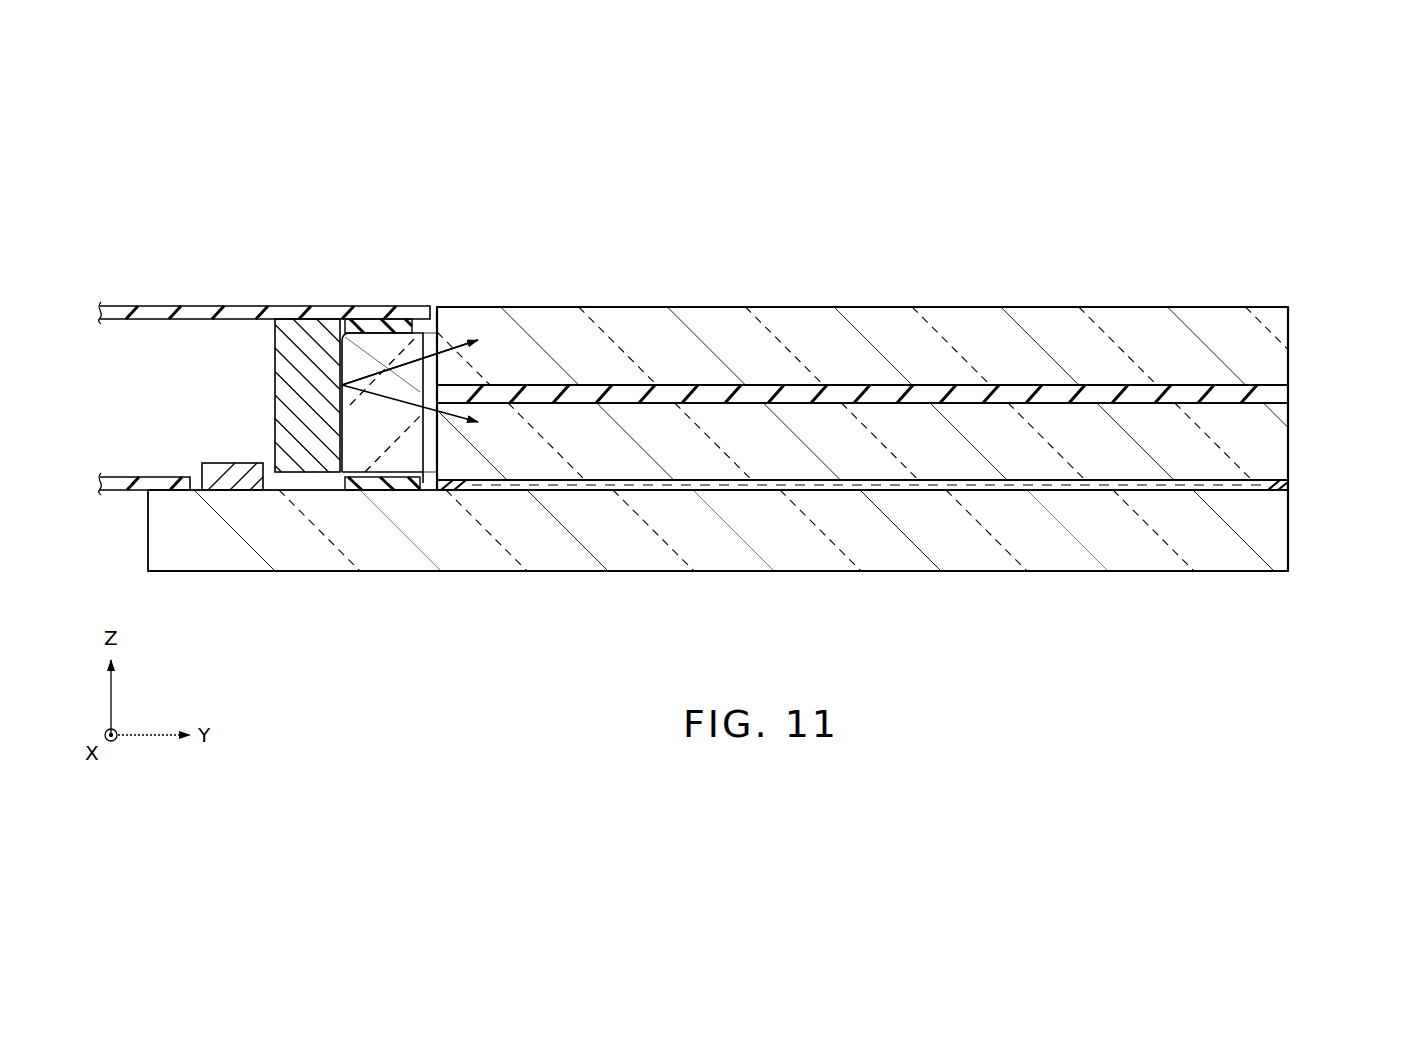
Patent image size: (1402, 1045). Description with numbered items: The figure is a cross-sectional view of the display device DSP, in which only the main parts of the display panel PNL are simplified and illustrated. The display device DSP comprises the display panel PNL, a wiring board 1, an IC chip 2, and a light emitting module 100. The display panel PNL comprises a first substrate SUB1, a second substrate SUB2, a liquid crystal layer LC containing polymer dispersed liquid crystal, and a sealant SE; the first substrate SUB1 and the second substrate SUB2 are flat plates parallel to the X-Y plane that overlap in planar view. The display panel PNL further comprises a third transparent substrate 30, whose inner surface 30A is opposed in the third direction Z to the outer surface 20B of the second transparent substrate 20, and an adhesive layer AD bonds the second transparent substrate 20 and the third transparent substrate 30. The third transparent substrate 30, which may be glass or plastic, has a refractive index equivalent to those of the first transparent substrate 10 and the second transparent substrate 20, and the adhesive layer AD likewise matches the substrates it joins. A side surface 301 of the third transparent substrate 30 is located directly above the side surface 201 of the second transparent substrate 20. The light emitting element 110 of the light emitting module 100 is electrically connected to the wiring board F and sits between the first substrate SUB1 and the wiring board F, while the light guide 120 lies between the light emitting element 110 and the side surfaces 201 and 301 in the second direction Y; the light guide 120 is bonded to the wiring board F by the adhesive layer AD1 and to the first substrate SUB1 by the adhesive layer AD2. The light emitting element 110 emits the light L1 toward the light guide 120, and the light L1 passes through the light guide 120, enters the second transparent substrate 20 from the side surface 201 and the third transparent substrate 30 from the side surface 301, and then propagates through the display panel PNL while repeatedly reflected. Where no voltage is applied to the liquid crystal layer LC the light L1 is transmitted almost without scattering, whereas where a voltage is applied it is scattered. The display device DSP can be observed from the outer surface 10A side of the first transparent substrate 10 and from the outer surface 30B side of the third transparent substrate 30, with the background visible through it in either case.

The display device DSP is at (1112, 183).
The wiring board F is at (199, 313).
The wiring board 1 is at (127, 477).
The IC chip 2 is at (215, 470).
The light emitting module 100 is at (305, 298).
The light emitting element 110 is at (282, 345).
The light guide 120 is at (355, 410).
The adhesive layer AD1 is at (372, 328).
The adhesive layer AD2 is at (362, 490).
The side surface of third transparent substrate 301 is at (428, 342).
The side surface of second transparent substrate 201 is at (428, 448).
The light L1 is at (443, 413).
The third transparent substrate 30 is at (1236, 318).
The inner surface of third transparent substrate 30A is at (1064, 400).
The outer surface of third transparent substrate 30B is at (1134, 303).
The adhesive layer AD is at (757, 385).
The display panel PNL is at (210, 560).
The second transparent substrate 20 is at (1108, 458).
The outer surface of second transparent substrate 20B is at (962, 400).
The second substrate SUB2 is at (1293, 445).
The liquid crystal layer LC is at (1237, 487).
The sealant SE is at (1272, 485).
The first transparent substrate 10 is at (1045, 555).
The first substrate SUB1 is at (1293, 540).
The outer surface of first transparent substrate 10A is at (1181, 576).